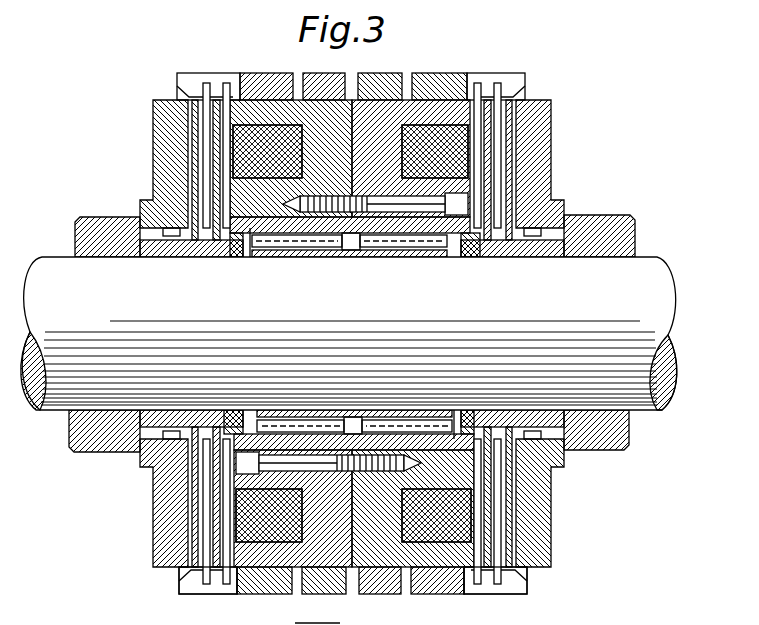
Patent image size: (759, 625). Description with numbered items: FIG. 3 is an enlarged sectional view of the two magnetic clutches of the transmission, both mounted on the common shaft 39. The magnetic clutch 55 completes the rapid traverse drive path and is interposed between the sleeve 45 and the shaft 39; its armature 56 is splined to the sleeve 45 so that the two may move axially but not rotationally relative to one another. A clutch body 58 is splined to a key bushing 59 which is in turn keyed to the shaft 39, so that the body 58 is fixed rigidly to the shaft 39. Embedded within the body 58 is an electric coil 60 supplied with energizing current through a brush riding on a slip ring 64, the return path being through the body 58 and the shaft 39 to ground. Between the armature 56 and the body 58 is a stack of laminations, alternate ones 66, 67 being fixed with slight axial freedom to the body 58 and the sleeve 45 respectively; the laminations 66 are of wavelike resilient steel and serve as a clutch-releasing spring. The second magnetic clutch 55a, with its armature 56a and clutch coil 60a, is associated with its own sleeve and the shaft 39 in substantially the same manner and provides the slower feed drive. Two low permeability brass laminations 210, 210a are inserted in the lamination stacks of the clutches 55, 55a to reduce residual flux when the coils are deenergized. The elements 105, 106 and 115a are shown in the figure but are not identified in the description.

The shaft 39 is at (652, 312).
The sleeve 45 is at (598, 218).
The magnetic clutch 55 is at (557, 141).
The second magnetic clutch 55a is at (148, 177).
The armature 56 is at (540, 163).
The clutch armature 56a is at (161, 128).
The clutch body 58 is at (365, 123).
The key bushing 59 is at (437, 258).
The electric coil 60 is at (446, 162).
The clutch coil 60a is at (290, 162).
The slip ring 64 is at (386, 75).
The laminations 66 is at (482, 585).
The laminations 67 is at (497, 235).
The end plate 105 is at (287, 623).
The connector 106 is at (223, 620).
The hub 115a is at (104, 218).
The low permeability brass lamination 210 is at (470, 76).
The low permeability brass lamination 210a is at (245, 61).